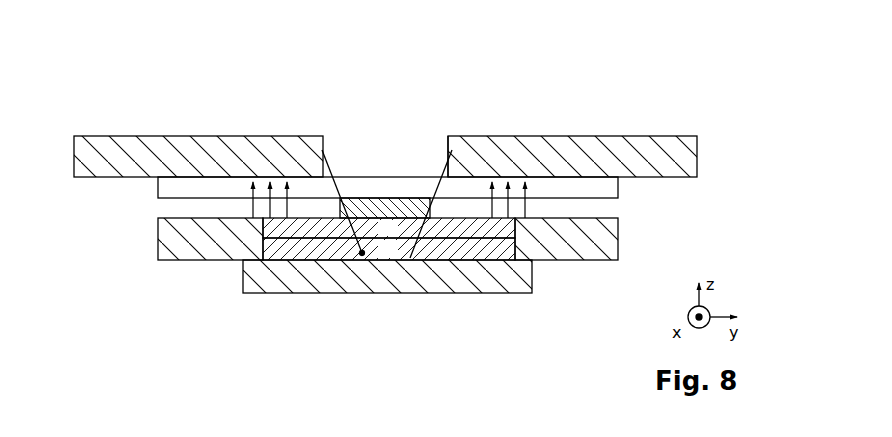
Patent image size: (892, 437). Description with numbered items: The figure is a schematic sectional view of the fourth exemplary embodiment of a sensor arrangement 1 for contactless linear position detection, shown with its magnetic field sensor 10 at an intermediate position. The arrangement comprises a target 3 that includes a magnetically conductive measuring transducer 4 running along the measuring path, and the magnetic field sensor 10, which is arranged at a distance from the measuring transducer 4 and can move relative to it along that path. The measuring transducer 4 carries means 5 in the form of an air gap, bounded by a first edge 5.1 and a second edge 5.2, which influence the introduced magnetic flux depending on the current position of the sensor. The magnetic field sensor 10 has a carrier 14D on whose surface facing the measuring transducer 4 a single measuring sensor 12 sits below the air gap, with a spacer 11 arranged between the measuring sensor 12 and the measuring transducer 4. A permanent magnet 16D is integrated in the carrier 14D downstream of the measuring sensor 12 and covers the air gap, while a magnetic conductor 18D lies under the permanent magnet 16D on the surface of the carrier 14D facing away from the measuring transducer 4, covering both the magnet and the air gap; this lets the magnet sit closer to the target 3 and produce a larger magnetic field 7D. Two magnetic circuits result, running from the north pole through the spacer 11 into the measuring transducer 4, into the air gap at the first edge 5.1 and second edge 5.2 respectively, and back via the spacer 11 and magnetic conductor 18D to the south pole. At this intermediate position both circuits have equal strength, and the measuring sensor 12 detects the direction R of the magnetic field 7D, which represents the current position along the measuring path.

The sensor arrangement 1 is at (392, 110).
The target 3 is at (407, 111).
The measuring transducer 4 is at (610, 150).
The means for influencing the introduced magnetic flux 5 is at (403, 157).
The first edge 5.1 is at (328, 149).
The second edge 5.2 is at (445, 149).
The magnetic field 7D is at (420, 115).
The spacer 11 is at (193, 190).
The measuring sensor 12 is at (388, 212).
The direction of the magnetic field R is at (377, 197).
The magnetic field sensor 10 is at (370, 285).
The carrier 14D is at (597, 240).
The permanent magnet 16D is at (445, 247).
The magnetic conductor 18D is at (498, 280).